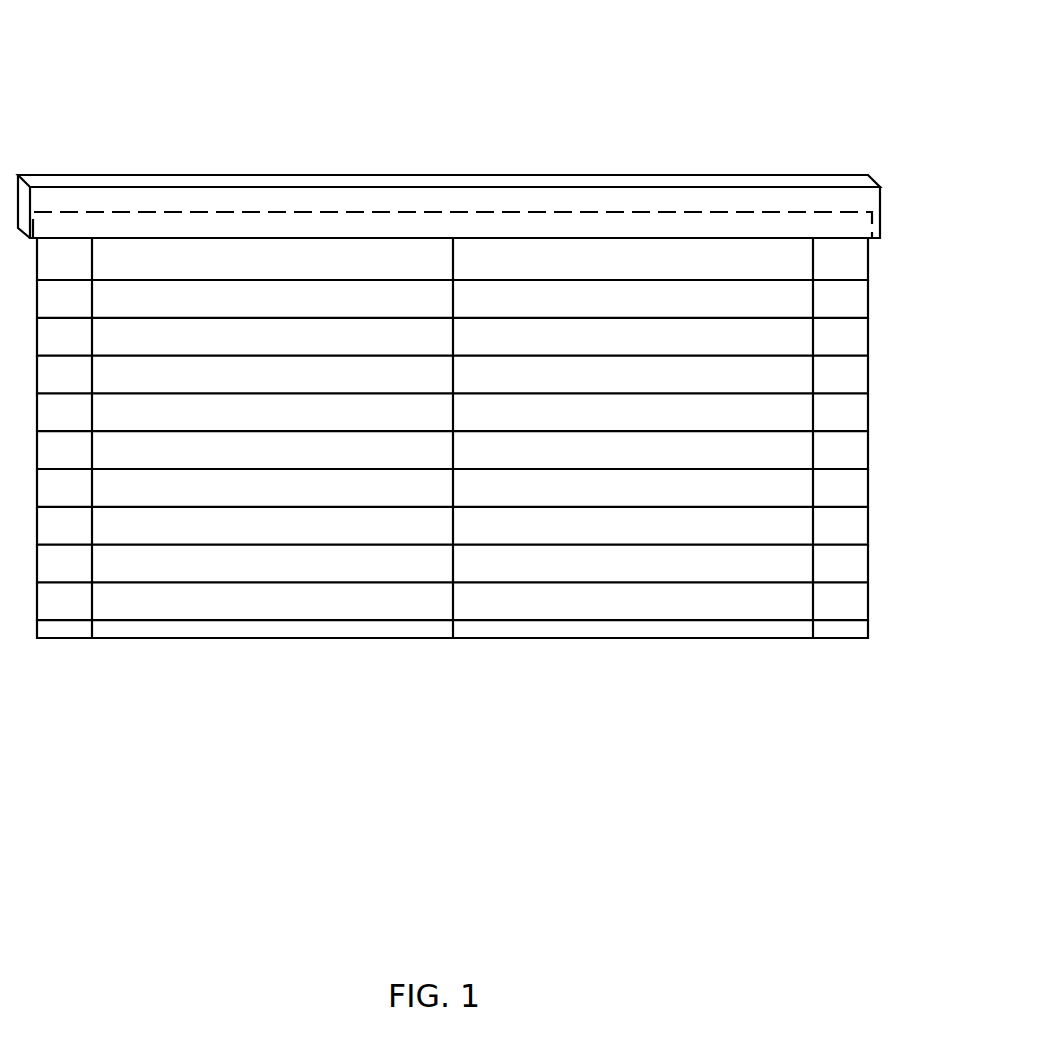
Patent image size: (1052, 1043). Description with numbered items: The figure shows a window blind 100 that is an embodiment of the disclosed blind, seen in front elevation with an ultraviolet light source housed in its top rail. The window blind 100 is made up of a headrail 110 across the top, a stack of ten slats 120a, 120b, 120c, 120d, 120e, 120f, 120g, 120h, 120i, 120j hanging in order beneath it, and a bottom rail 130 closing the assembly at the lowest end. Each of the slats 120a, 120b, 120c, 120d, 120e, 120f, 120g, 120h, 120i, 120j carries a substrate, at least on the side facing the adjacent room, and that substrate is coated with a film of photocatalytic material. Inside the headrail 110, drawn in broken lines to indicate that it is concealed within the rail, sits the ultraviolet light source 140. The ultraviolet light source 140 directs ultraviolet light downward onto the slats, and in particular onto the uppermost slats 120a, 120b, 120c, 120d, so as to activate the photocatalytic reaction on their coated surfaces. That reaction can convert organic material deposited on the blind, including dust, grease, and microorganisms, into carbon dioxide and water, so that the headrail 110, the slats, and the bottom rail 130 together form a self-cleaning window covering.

The window blind 100 is at (67, 105).
The headrail 110 is at (826, 184).
The slat 120a is at (284, 273).
The slat 120b is at (284, 311).
The slat 120c is at (284, 349).
The slat 120d is at (284, 387).
The slat 120e is at (284, 425).
The slat 120f is at (284, 463).
The slat 120g is at (284, 501).
The slat 120h is at (284, 539).
The slat 120i is at (284, 577).
The slat 120j is at (284, 615).
The bottom rail 130 is at (838, 628).
The ultraviolet light source 140 is at (842, 222).